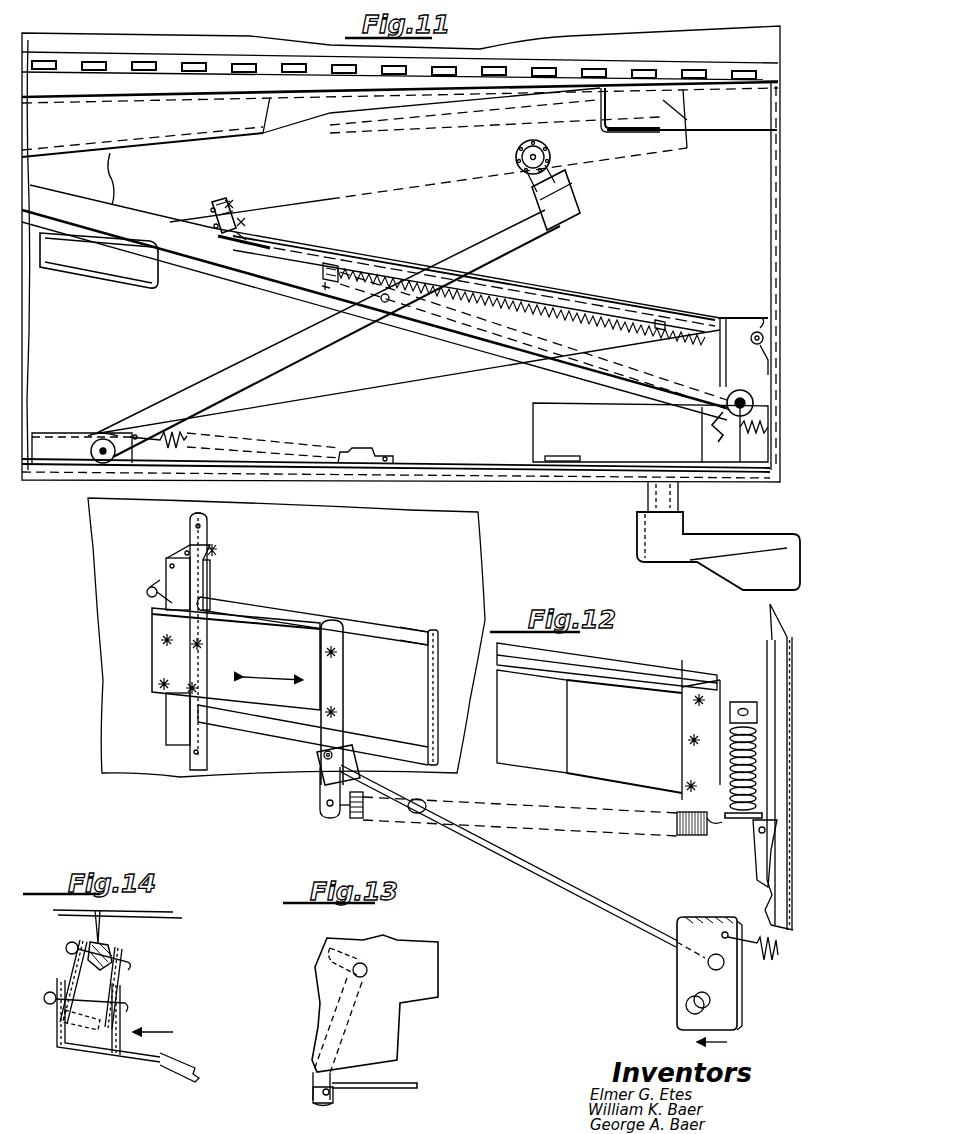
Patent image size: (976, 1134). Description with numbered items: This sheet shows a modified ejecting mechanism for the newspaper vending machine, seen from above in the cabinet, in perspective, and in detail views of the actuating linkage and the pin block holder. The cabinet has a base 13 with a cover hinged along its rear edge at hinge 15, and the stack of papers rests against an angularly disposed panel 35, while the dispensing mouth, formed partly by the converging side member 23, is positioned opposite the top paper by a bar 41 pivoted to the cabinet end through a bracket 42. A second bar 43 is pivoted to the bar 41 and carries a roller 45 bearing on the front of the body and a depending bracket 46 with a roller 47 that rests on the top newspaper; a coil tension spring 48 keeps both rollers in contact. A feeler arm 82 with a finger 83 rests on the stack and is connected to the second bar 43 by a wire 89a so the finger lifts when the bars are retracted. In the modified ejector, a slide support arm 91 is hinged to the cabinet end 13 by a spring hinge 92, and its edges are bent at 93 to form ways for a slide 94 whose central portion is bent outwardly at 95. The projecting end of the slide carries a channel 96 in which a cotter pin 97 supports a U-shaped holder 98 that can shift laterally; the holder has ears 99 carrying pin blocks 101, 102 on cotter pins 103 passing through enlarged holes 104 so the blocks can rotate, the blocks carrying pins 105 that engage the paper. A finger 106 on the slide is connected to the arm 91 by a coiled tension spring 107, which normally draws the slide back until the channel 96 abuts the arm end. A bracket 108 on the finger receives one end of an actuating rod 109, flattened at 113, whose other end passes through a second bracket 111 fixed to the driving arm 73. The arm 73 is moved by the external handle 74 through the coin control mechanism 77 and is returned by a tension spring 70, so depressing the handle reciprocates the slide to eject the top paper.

In FIG. 11, the base 13 is at (778, 237).
In FIG. 12, the base 13 is at (790, 930).
In FIG. 11, the hinge 15 is at (173, 38).
In FIG. 11, the side member 23 is at (73, 267).
In FIG. 11, the angularly disposed panel 35 is at (55, 110).
In FIG. 11, the bar 41 is at (235, 263).
In FIG. 11, the bracket 42 is at (760, 393).
In FIG. 11, the second bar 43 is at (534, 242).
In FIG. 11, the roller 45 is at (90, 447).
In FIG. 11, the depending bracket 46 is at (560, 178).
In FIG. 11, the roller 47 is at (523, 167).
In FIG. 11, the coil tension spring 48 is at (182, 437).
In FIG. 11, the tension spring 70 is at (750, 432).
In FIG. 12, the tension spring 70 is at (770, 965).
In FIG. 13, the arm 73 is at (323, 1078).
In FIG. 11, the external handle 74 is at (742, 568).
In FIG. 11, the coin control mechanism 77 is at (607, 452).
In FIG. 13, the coin control mechanism 77 is at (430, 967).
In FIG. 11, the feeler arm 82 is at (718, 133).
In FIG. 11, the finger 83 is at (610, 88).
In FIG. 11, the wire 89a is at (470, 373).
In FIG. 11, the slide support arm 91 is at (653, 310).
In FIG. 12, the slide support arm 91 is at (667, 697).
In FIG. 11, the spring hinge 92 is at (763, 333).
In FIG. 12, the spring hinge 92 is at (740, 830).
In FIG. 12, the bent edges 93 is at (430, 630).
In FIG. 11, the slide 94 is at (510, 297).
In FIG. 12, the slide 94 is at (357, 657).
In FIG. 14, the slide 94 is at (167, 1072).
In FIG. 12, the outwardly bent central portion 95 is at (400, 625).
In FIG. 11, the channel 96 is at (248, 228).
In FIG. 12, the channel 96 is at (157, 605).
In FIG. 14, the channel 96 is at (122, 1023).
In FIG. 12, the cotter pin 97 is at (153, 588).
In FIG. 14, the cotter pin 97 is at (50, 1007).
In FIG. 11, the holder 98 is at (230, 207).
In FIG. 14, the holder 98 is at (78, 967).
In FIG. 12, the ears 99 is at (185, 543).
In FIG. 12, the pin block 101 is at (207, 533).
In FIG. 12, the pin block 102 is at (208, 752).
In FIG. 12, the cotter pins 103 is at (220, 558).
In FIG. 14, the cotter pins 103 is at (67, 945).
In FIG. 14, the enlarged holes 104 is at (110, 948).
In FIG. 12, the pins 105 is at (197, 513).
In FIG. 14, the pins 105 is at (97, 940).
In FIG. 11, the finger 106 is at (337, 263).
In FIG. 12, the finger 106 is at (327, 697).
In FIG. 11, the coiled tension spring 107 is at (655, 330).
In FIG. 12, the coiled tension spring 107 is at (355, 818).
In FIG. 12, the bracket 108 is at (318, 772).
In FIG. 11, the actuating rod 109 is at (453, 325).
In FIG. 12, the actuating rod 109 is at (556, 880).
In FIG. 13, the actuating rod 109 is at (387, 1088).
In FIG. 12, the second bracket 111 is at (700, 978).
In FIG. 13, the second bracket 111 is at (312, 1087).
In FIG. 12, the flattened portion 113 is at (418, 814).